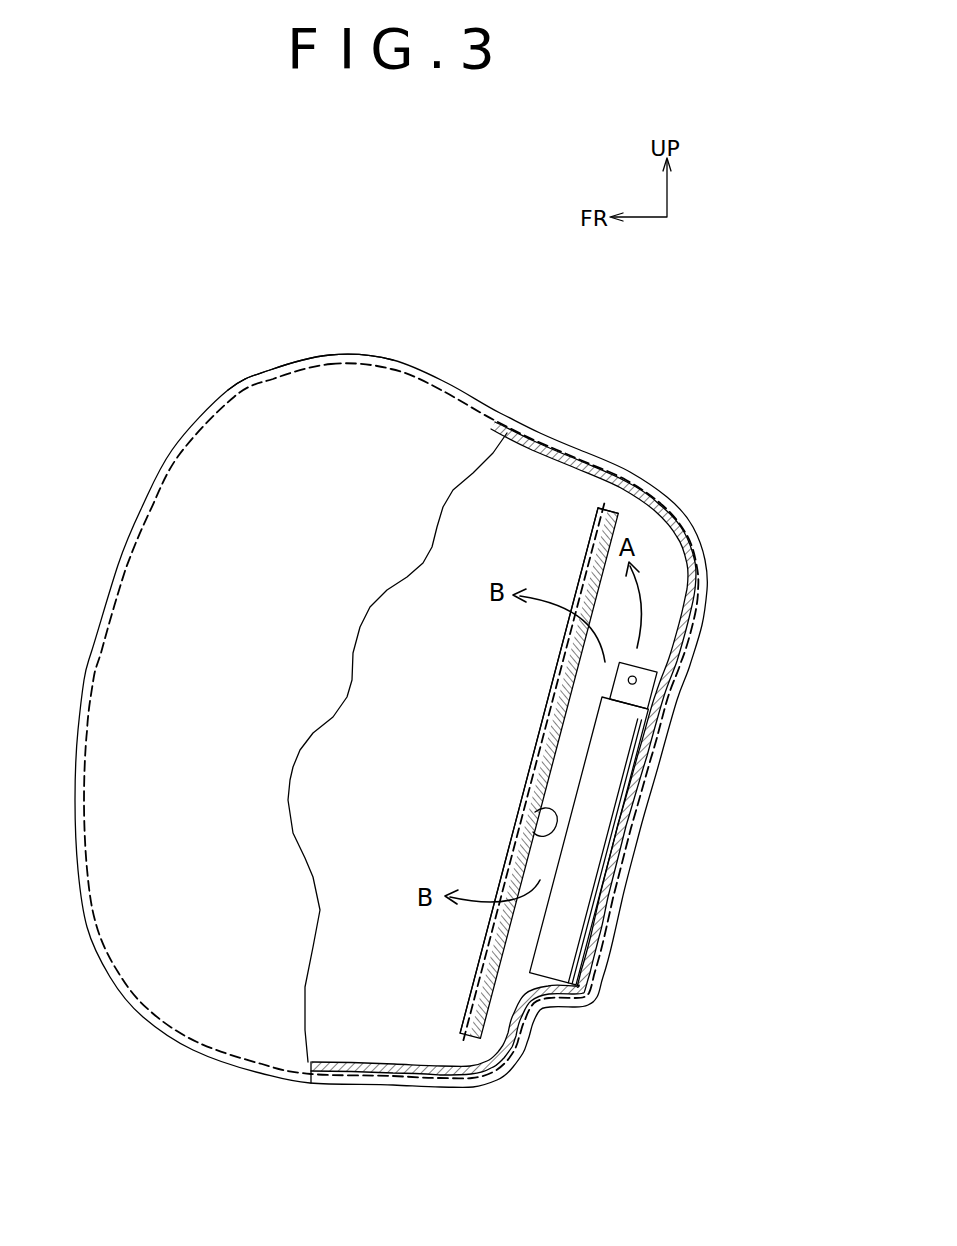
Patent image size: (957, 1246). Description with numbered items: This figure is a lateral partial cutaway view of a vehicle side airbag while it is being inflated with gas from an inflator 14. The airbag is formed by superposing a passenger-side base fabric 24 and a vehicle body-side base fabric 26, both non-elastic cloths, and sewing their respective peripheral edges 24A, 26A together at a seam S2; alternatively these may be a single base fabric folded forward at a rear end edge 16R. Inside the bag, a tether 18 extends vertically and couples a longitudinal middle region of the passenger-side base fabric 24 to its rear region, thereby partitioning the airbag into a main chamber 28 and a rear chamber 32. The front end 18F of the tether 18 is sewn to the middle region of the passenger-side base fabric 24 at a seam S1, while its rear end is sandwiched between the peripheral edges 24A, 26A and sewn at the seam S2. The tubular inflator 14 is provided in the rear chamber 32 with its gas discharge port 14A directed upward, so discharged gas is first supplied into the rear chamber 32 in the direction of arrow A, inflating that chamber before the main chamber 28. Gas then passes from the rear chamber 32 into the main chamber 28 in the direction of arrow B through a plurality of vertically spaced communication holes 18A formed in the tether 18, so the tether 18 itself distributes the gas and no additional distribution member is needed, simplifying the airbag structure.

The inflator 14 is at (525, 950).
The gas discharge port 14A is at (655, 685).
The rear end edge 16R is at (645, 819).
The tether 18 is at (530, 828).
The communication holes 18A is at (568, 622).
The front end of the tether 18F is at (549, 697).
The passenger-side base fabric 24 is at (547, 415).
The peripheral edge of the passenger-side base fabric 24A is at (580, 450).
The vehicle body-side base fabric 26 is at (254, 413).
The peripheral edge of the vehicle body-side base fabric 26A is at (298, 355).
The main chamber 28 is at (372, 718).
The rear chamber 32 is at (657, 537).
The seam S1 is at (527, 783).
The seam S2 is at (397, 367).